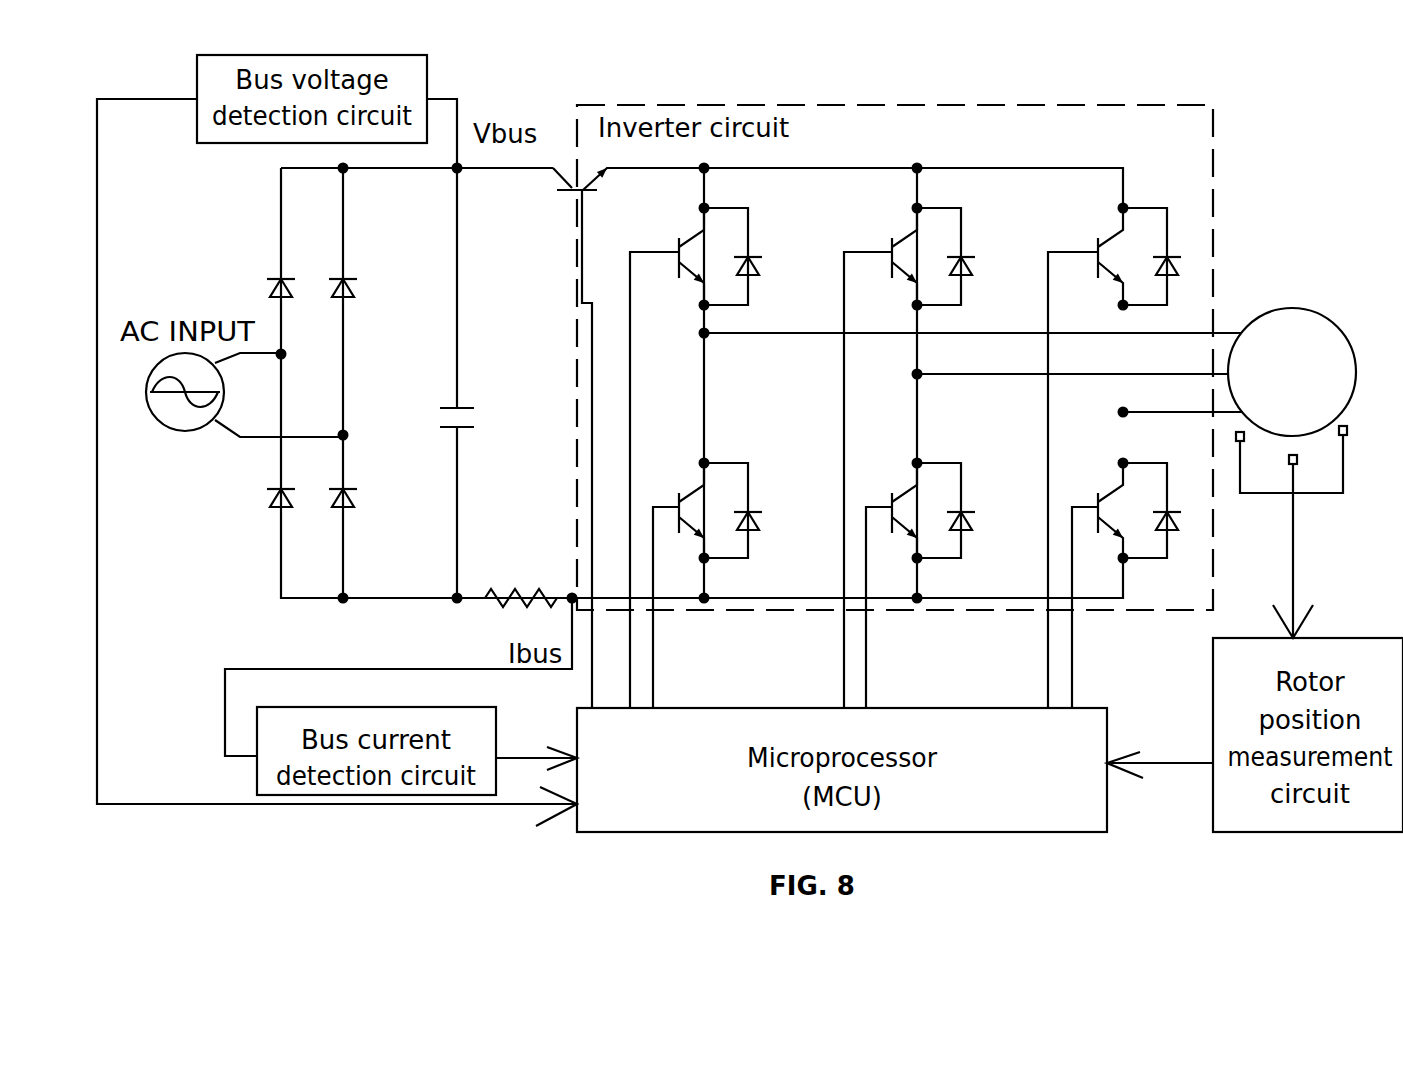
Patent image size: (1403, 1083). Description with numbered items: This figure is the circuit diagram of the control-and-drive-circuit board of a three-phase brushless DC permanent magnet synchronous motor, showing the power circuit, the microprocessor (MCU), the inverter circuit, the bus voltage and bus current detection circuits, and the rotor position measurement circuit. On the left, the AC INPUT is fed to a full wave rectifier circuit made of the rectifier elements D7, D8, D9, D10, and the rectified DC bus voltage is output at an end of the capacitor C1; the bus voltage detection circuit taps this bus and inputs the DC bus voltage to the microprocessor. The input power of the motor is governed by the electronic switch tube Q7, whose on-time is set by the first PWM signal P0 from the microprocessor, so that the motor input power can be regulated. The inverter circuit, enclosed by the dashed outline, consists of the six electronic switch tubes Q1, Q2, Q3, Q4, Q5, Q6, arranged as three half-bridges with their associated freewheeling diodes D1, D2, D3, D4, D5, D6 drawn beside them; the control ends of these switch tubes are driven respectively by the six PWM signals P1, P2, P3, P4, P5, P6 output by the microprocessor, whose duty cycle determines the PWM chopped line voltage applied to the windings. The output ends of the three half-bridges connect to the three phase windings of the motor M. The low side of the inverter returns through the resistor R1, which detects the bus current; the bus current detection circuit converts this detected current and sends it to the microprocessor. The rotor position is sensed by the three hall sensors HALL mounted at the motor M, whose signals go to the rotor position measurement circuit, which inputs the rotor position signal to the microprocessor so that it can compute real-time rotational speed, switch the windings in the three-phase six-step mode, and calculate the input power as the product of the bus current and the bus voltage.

The freewheeling diode D1 is at (749, 258).
The freewheeling diode D2 is at (961, 258).
The freewheeling diode D3 is at (1166, 258).
The freewheeling diode D4 is at (749, 512).
The freewheeling diode D5 is at (961, 512).
The freewheeling diode D6 is at (1152, 510).
The rectifier diode D7 is at (262, 272).
The rectifier diode D8 is at (358, 383).
The rectifier diode D9 is at (264, 516).
The rectifier diode D10 is at (366, 516).
The electronic switch tube Q1 is at (670, 456).
The electronic switch tube Q2 is at (883, 456).
The electronic switch tube Q3 is at (1088, 456).
The electronic switch tube Q4 is at (681, 583).
The electronic switch tube Q5 is at (893, 583).
The electronic switch tube Q6 is at (1096, 582).
The electronic switch tube Q7 is at (620, 438).
The capacitor C1 is at (471, 383).
The resistor R1 is at (514, 579).
The first PWM signal P0 is at (569, 692).
The PWM signal P1 is at (613, 692).
The PWM signal P2 is at (675, 692).
The PWM signal P3 is at (824, 692).
The PWM signal P4 is at (888, 692).
The PWM signal P5 is at (1023, 692).
The PWM signal P6 is at (1096, 692).
The motor M is at (1292, 372).
The Hall sensors HALL is at (1304, 532).